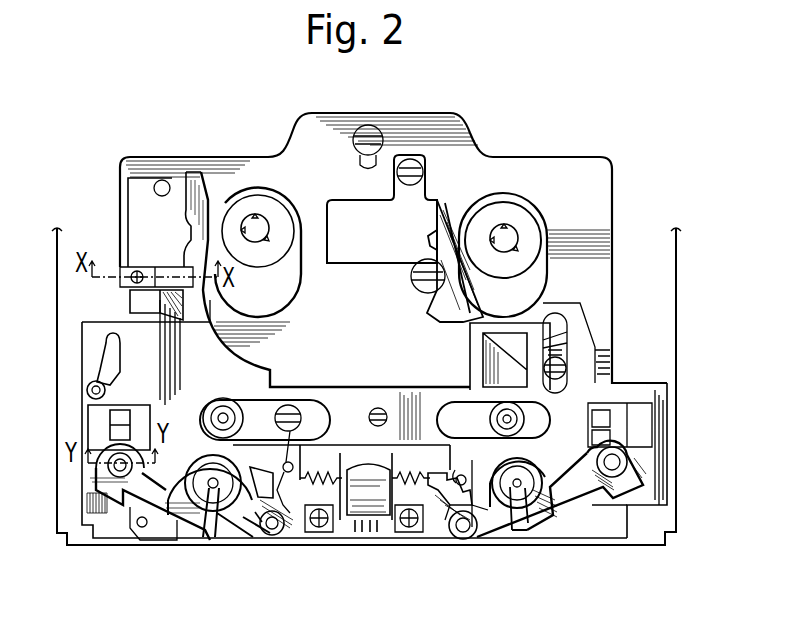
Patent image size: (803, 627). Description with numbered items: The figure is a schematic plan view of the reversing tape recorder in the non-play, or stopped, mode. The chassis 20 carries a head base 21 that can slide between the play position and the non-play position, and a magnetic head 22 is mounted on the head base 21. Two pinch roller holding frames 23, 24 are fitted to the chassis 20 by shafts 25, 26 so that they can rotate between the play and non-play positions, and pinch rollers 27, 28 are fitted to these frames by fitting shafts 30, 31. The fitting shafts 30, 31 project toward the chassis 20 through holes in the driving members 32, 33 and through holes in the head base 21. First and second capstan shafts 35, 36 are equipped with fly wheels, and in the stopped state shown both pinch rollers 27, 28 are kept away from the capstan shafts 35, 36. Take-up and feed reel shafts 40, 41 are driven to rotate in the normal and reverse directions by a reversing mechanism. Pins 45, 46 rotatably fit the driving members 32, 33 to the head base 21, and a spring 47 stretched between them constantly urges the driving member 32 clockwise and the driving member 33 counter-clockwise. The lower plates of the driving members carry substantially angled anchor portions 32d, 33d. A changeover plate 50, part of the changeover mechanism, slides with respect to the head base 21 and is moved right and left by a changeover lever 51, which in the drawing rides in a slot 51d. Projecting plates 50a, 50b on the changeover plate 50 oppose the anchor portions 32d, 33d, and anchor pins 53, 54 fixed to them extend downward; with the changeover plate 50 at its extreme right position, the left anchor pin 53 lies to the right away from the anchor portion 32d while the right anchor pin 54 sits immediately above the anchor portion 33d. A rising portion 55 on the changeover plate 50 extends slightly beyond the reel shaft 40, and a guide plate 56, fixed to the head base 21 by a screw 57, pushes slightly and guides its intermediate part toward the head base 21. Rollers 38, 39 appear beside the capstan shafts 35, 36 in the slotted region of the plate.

The chassis 20 is at (676, 302).
The head base 21 is at (612, 216).
The magnetic head 22 is at (363, 530).
The pinch roller holding frame 23 is at (190, 517).
The pinch roller holding frame 24 is at (563, 493).
The shaft 25 is at (112, 476).
The shaft 26 is at (627, 503).
The pinch roller 27 is at (225, 516).
The pinch roller 28 is at (500, 507).
The fitting shaft 30 is at (213, 488).
The fitting shaft 31 is at (524, 525).
The driving member 32 is at (254, 520).
The anchor portion 32d is at (262, 524).
The driving member 33 is at (470, 537).
The anchor portion 33d is at (447, 480).
The first capstan shaft 35 is at (224, 416).
The second capstan shaft 36 is at (472, 388).
The roller 38 is at (215, 416).
The roller 39 is at (490, 419).
The take-up reel shaft 40 is at (254, 222).
The feed reel shaft 41 is at (507, 226).
The pin 45 is at (280, 527).
The pin 46 is at (457, 540).
The spring 47 is at (337, 510).
The changeover plate 50 is at (118, 322).
The projecting plate 50a is at (345, 396).
The projecting plate 50b is at (420, 402).
The changeover lever 51 is at (105, 392).
The slot 51d is at (110, 380).
The anchor pin 53 is at (294, 404).
The anchor pin 54 is at (460, 474).
The rising portion 55 is at (194, 178).
The guide plate 56 is at (168, 270).
The screw 57 is at (135, 272).